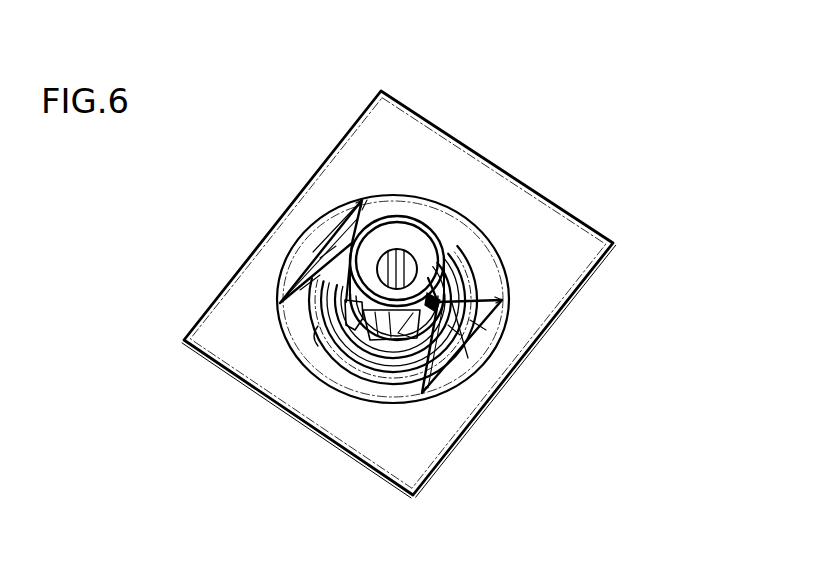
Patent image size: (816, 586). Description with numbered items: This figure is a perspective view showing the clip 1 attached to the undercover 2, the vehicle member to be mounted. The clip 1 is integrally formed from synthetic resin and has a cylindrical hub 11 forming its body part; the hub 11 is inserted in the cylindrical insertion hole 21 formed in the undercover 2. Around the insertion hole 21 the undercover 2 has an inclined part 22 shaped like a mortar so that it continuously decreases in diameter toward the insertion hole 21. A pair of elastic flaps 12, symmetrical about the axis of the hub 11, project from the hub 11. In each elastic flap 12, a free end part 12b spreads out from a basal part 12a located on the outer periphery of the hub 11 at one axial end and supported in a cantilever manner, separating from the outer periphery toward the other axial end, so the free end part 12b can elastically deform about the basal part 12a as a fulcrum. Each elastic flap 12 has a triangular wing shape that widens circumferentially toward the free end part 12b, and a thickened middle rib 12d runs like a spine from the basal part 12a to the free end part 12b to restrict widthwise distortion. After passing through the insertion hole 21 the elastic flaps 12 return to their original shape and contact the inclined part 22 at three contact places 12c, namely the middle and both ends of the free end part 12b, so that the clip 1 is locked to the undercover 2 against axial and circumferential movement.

The clip 1 is at (423, 72).
The undercover 2 is at (598, 286).
The cylindrical hub 11 is at (435, 226).
The elastic flap 12 is at (372, 212).
The basal part 12a is at (325, 247).
The free end part 12b is at (312, 284).
The contact place 12c is at (367, 200).
The middle rib 12d is at (327, 249).
The insertion hole 21 is at (317, 330).
The inclined part 22 is at (361, 387).